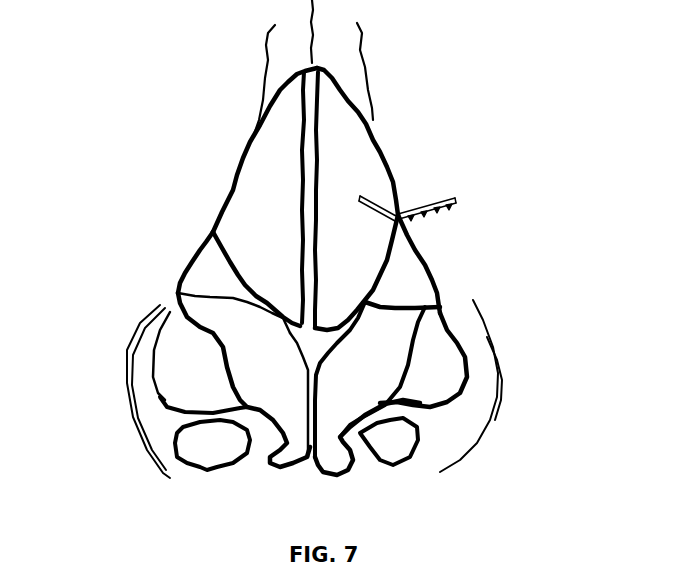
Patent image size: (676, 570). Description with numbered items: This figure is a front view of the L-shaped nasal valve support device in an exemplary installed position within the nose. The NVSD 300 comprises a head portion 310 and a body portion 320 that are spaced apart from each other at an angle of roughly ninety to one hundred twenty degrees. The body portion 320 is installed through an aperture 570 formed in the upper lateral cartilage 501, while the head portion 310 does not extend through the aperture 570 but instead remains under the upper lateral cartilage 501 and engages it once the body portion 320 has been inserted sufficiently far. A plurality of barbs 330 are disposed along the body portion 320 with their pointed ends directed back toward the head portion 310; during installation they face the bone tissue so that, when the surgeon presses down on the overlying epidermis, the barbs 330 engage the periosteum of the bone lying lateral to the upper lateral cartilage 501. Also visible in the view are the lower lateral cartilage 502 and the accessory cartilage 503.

The NVSD 300 is at (431, 181).
The head portion 310 is at (375, 201).
The body portion 320 is at (413, 210).
The barbs 330 is at (430, 218).
The aperture 570 is at (392, 210).
The upper lateral cartilage 501 is at (287, 167).
The lower lateral cartilage 502 is at (223, 323).
The accessory cartilage 503 is at (195, 372).